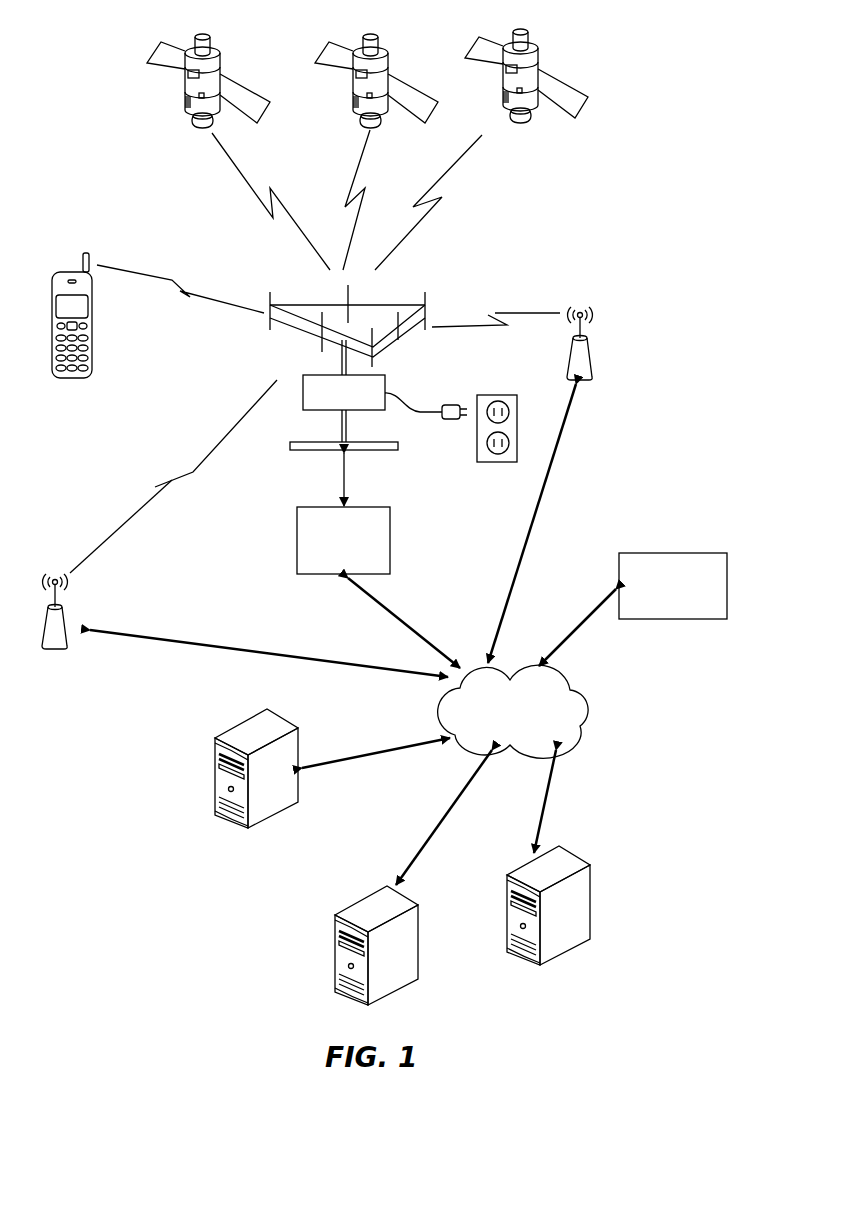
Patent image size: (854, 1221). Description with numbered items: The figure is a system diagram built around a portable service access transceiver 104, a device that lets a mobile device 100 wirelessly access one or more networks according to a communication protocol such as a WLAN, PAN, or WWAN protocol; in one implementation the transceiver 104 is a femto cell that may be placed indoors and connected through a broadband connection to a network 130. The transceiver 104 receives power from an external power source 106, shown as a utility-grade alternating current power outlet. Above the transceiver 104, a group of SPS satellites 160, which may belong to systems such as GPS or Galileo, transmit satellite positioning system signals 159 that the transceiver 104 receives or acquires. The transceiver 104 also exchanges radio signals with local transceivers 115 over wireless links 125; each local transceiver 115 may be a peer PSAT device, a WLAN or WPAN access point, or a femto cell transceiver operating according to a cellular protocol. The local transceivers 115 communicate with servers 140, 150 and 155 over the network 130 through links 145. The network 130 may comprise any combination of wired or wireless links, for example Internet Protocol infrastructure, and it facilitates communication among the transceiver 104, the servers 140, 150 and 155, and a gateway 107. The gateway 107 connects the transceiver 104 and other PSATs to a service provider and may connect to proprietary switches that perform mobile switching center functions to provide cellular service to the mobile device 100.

The mobile device 100 is at (52, 322).
The portable service access transceiver 104 is at (426, 298).
The external power source 106 is at (492, 396).
The gateway 107 is at (372, 507).
The local transceiver 115 is at (55, 650).
The wireless link 125 is at (503, 313).
The network 130 is at (585, 687).
The server 140 is at (282, 714).
The link 145 is at (227, 653).
The server 150 is at (592, 867).
The server 155 is at (418, 920).
The satellite positioning system signal 159 is at (237, 163).
The SPS satellite 160 is at (122, 89).